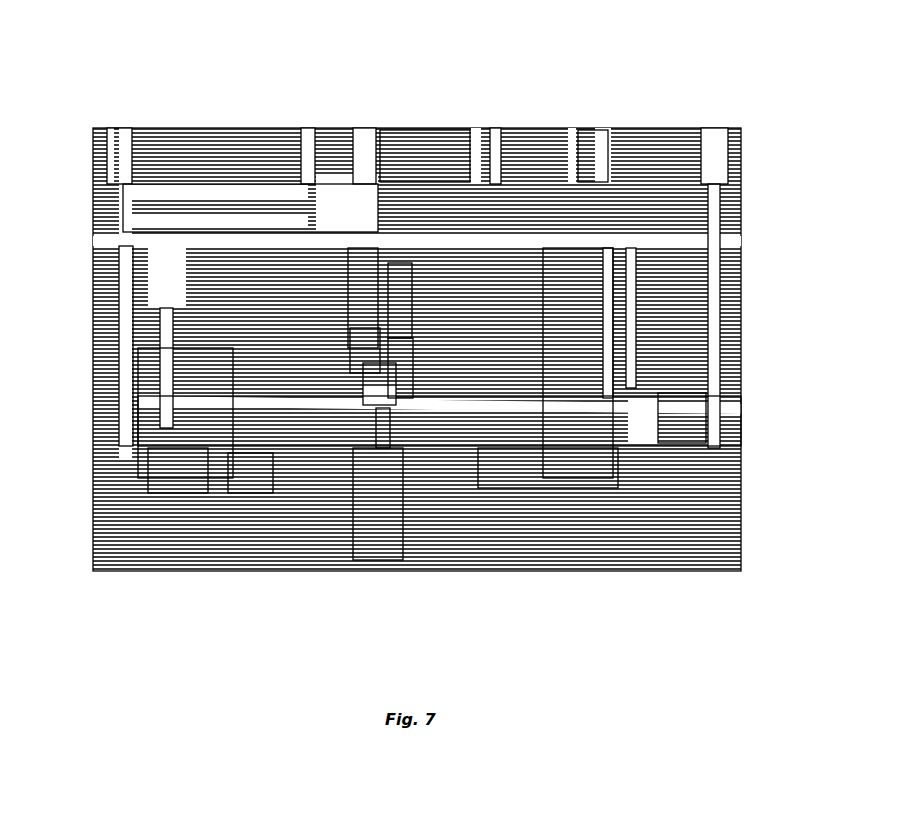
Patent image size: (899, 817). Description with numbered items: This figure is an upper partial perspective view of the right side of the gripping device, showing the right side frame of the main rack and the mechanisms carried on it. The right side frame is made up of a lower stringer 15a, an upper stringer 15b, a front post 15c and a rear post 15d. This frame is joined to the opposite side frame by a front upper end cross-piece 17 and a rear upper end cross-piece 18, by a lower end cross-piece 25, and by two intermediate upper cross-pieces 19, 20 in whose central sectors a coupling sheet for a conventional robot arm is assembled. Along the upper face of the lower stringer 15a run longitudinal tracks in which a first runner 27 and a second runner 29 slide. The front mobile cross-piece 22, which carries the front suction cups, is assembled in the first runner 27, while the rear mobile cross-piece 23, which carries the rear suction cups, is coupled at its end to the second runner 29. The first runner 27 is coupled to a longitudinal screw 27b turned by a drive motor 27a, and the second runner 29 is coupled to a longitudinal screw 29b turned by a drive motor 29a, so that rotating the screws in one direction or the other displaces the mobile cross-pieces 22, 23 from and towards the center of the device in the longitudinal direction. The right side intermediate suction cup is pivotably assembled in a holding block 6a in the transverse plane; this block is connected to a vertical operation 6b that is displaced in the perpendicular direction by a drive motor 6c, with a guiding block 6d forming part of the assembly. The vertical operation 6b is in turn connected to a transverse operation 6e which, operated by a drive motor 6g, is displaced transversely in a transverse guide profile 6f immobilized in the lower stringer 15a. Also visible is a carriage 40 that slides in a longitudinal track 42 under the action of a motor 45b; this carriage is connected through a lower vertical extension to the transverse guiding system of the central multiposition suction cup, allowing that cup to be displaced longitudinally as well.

The lower stringer 15a is at (258, 388).
The upper stringer 15b is at (172, 192).
The front post 15c is at (125, 296).
The rear post 15d is at (712, 280).
The front upper end cross-piece 17 is at (130, 150).
The rear upper end cross-piece 18 is at (706, 146).
The intermediate upper cross-piece 19 is at (358, 136).
The intermediate upper cross-piece 20 is at (490, 136).
The front mobile cross-piece 22 is at (160, 361).
The second mobile cross-piece 23 is at (603, 322).
The lower end cross-piece 25 is at (627, 293).
The first runner 27 is at (200, 405).
The drive motor 27a is at (255, 480).
The longitudinal screw 27b is at (175, 472).
The second runner 29 is at (555, 416).
The drive motor 29a is at (680, 425).
The longitudinal screw 29b is at (495, 412).
The carriage 40 is at (398, 130).
The longitudinal track 42 is at (303, 135).
The motor 45b is at (605, 130).
The holding block 6a is at (392, 345).
The vertical operation 6b is at (394, 296).
The drive motor 6c is at (350, 256).
The guiding block 6d is at (350, 343).
The transverse operation 6e is at (370, 408).
The transverse guide profile 6f is at (358, 373).
The drive motor 6g is at (382, 480).